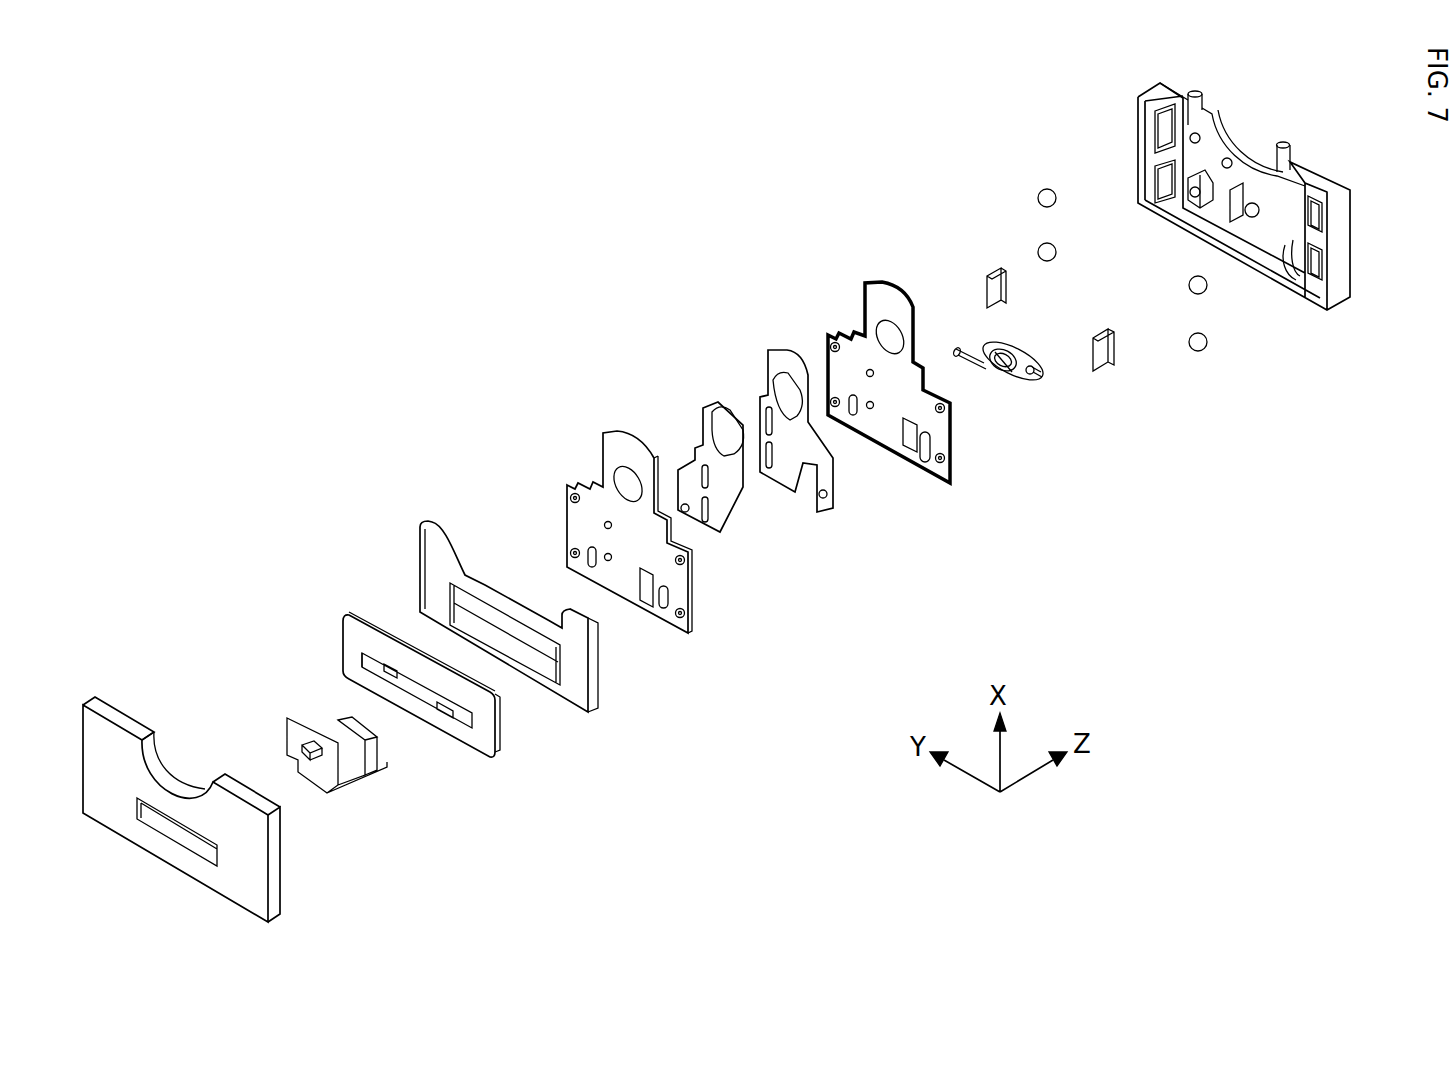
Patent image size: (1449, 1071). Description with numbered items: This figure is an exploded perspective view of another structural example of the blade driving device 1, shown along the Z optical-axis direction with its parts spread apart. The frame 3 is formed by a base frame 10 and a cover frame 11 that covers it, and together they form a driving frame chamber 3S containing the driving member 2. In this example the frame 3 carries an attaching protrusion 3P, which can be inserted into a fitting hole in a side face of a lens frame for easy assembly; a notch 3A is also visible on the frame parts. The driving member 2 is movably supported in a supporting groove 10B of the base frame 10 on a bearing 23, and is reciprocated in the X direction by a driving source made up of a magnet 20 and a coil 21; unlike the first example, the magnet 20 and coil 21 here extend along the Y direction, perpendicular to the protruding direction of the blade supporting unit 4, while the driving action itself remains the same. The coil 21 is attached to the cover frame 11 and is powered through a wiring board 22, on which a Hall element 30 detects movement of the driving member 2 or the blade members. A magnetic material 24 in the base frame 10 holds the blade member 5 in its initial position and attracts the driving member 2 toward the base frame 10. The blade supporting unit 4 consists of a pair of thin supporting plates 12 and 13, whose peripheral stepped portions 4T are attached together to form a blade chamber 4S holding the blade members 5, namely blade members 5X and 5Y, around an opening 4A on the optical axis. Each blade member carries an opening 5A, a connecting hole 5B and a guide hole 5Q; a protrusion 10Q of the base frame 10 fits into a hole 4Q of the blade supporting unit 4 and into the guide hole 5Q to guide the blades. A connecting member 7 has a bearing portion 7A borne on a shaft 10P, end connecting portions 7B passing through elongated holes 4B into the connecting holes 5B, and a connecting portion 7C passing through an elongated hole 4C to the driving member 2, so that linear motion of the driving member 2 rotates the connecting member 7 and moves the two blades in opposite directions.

The blade driving device 1 is at (600, 279).
The driving member 2 is at (600, 672).
The frame 3 is at (746, 511).
The base frame 10 is at (1355, 300).
The cover frame 11 is at (200, 884).
The notch 3A is at (178, 768).
The attaching protrusion 3P is at (1200, 94).
The driving frame chamber 3S is at (1257, 242).
The blade supporting unit 4 is at (702, 415).
The supporting plate 12 is at (878, 280).
The supporting plate 13 is at (565, 527).
The opening 4A is at (618, 483).
The elongated hole 4B is at (594, 568).
The elongated hole 4C is at (648, 608).
The hole 4Q is at (571, 497).
The blade chamber 4S is at (953, 425).
The stepped portion 4T is at (908, 298).
The blade member 5 is at (762, 452).
The blade member 5X is at (835, 482).
The blade member 5Y is at (702, 430).
The opening 5A is at (774, 383).
The connecting hole 5B is at (689, 513).
The guide hole 5Q is at (763, 452).
The connecting member 7 is at (1015, 346).
The bearing portion 7A is at (990, 375).
The connecting portion 7B is at (955, 350).
The connecting portion 7C is at (1035, 366).
The supporting groove 10B is at (1163, 114).
The shaft 10P is at (1248, 214).
The protrusion 10Q is at (1222, 163).
The magnet 20 is at (531, 678).
The coil 21 is at (453, 747).
The wiring board 22 is at (352, 790).
The bearing 23 is at (1043, 190).
The magnetic material 24 is at (995, 268).
The Hall element 30 is at (308, 760).